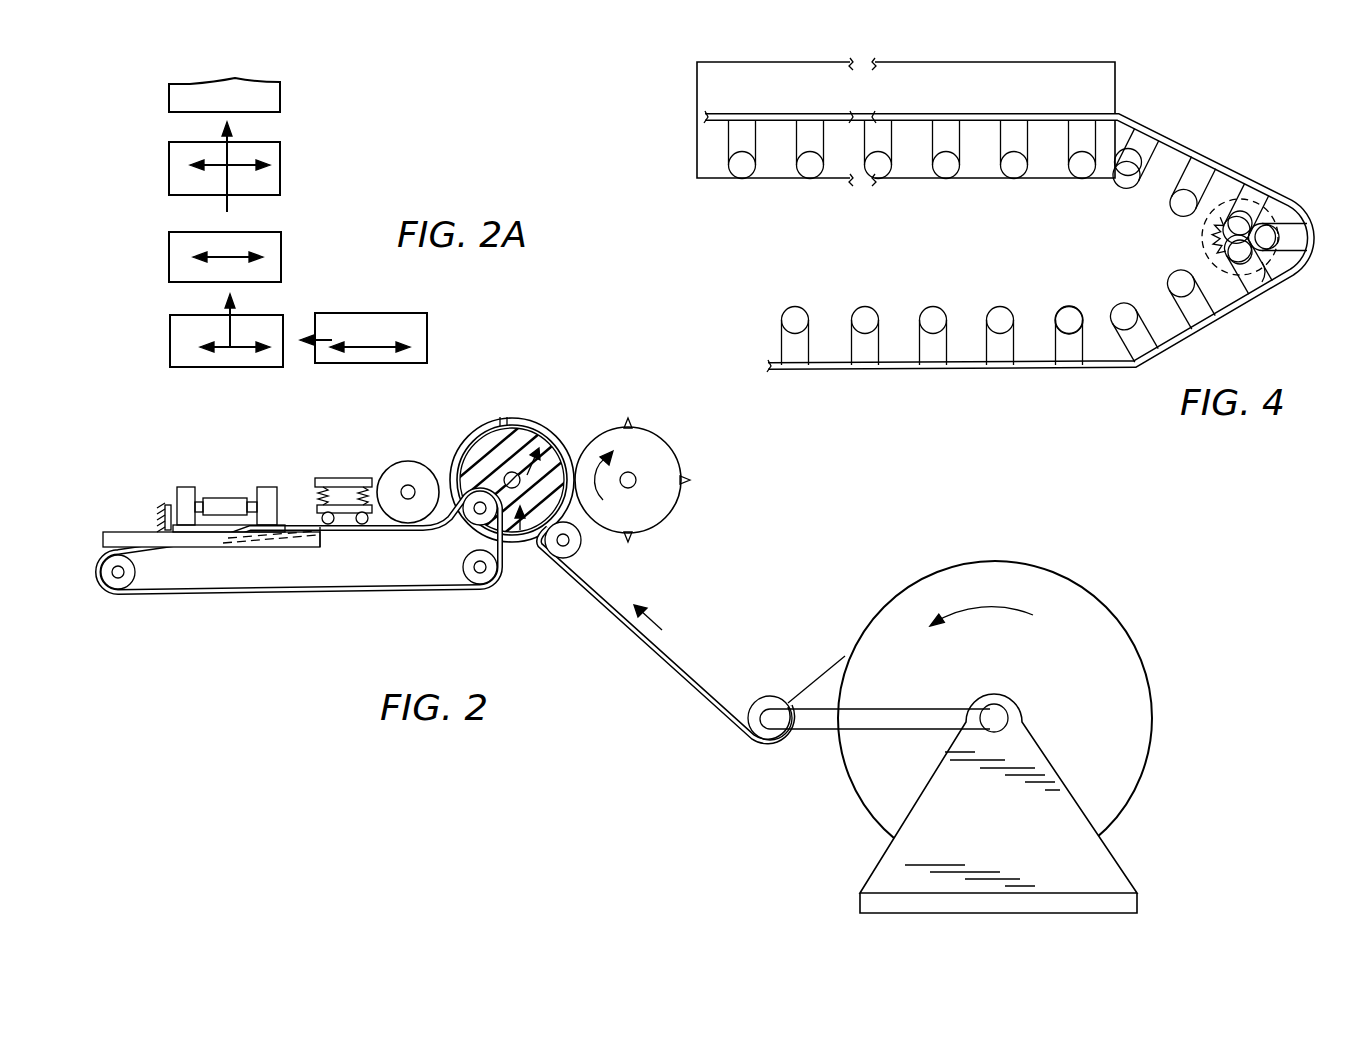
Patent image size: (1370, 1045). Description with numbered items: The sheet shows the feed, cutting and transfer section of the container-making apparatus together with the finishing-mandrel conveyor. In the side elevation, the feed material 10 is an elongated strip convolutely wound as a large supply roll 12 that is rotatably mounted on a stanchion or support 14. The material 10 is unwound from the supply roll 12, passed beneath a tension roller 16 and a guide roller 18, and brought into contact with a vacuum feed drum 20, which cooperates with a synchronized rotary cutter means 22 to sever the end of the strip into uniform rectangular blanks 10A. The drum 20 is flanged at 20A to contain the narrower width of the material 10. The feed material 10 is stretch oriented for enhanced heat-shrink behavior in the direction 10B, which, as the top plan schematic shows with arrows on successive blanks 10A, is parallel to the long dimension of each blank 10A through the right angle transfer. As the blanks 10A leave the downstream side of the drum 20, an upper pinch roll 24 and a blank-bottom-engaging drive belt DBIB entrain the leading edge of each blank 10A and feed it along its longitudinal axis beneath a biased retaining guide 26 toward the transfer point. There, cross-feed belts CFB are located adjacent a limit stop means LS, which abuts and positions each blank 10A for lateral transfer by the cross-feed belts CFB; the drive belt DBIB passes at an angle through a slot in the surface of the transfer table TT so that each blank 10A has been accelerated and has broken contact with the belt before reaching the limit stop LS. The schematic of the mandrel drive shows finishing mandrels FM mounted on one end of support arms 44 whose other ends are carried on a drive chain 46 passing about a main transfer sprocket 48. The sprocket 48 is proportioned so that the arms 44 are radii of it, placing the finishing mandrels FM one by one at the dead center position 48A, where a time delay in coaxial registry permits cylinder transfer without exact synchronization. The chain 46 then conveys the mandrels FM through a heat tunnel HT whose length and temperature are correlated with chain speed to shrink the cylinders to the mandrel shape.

In FIG. 2, the feed material 10 is at (703, 692).
In FIG. 2A, the rectangular blanks 10A is at (281, 93).
In FIG. 2, the rectangular blanks 10A is at (218, 541).
In FIG. 2A, the stretch orientation direction 10B is at (220, 167).
In FIG. 2, the supply roll 12 is at (1048, 673).
In FIG. 2, the support 14 is at (1042, 829).
In FIG. 2, the tension roller 16 is at (773, 698).
In FIG. 2, the guide roller 18 is at (581, 548).
In FIG. 2, the vacuum feed drum 20 is at (520, 527).
In FIG. 2, the flange 20A is at (501, 420).
In FIG. 2, the rotary cutter means 22 is at (665, 460).
In FIG. 2, the upper pinch roll 24 is at (400, 465).
In FIG. 2, the biased retaining guide 26 is at (340, 479).
In FIG. 4, the support arms 44 is at (1298, 237).
In FIG. 4, the drive chain 46 is at (897, 373).
In FIG. 4, the main transfer sprocket 48 is at (1222, 238).
In FIG. 4, the dead center position 48A is at (1275, 265).
In FIG. 2, the cross-feed belts CFB is at (170, 480).
In FIG. 2, the limit stop means LS is at (158, 505).
In FIG. 2, the transfer table TT is at (105, 532).
In FIG. 2, the drive belt DBIB is at (338, 592).
In FIG. 4, the heat tunnel HT is at (745, 62).
In FIG. 4, the finishing mandrels FM is at (1187, 190).